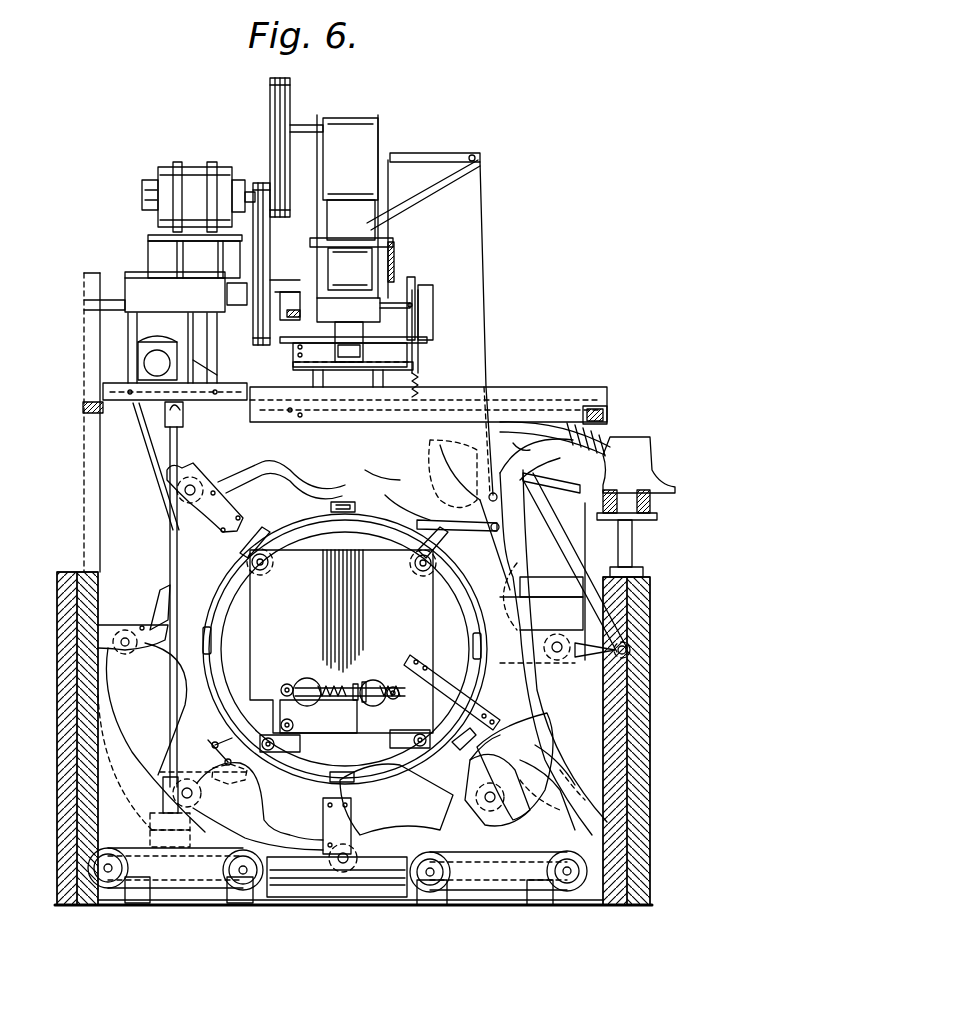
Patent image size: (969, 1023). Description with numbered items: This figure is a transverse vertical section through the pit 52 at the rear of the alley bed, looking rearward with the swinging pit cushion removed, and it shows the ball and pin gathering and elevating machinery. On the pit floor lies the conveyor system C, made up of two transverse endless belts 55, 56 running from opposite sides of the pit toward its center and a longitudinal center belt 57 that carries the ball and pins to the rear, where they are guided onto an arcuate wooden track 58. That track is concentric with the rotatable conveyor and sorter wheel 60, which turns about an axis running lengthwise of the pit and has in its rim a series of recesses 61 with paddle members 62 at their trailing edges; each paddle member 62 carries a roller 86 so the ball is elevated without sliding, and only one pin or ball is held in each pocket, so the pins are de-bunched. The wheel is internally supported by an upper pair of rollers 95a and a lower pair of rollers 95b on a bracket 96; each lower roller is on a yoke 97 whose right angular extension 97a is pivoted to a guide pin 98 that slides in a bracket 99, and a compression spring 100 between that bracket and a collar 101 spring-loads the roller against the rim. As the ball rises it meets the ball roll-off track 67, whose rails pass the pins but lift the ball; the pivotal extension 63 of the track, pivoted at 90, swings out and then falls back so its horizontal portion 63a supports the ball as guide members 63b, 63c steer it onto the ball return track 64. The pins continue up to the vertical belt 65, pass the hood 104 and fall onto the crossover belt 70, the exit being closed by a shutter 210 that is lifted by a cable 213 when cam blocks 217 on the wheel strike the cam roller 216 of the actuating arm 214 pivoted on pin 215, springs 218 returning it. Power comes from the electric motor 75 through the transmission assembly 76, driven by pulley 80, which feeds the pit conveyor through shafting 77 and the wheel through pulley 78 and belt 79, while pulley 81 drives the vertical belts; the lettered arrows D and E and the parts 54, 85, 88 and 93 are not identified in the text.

The pit 52 is at (583, 900).
The belt 79 is at (143, 432).
The crossover belt 70 is at (352, 302).
The electric motor 75 is at (193, 160).
The transmission assembly 76 is at (140, 300).
The pulley 78 is at (153, 340).
The pulley 81 is at (272, 93).
The drive direction E is at (249, 150).
The pulley 80 is at (270, 270).
The cam roller 216 is at (412, 508).
The vertical belt 65 is at (355, 187).
The shutter 210 is at (355, 277).
The hood 104 is at (397, 218).
The spring 218 is at (391, 266).
The cable 213 is at (487, 298).
The cam block 217 is at (278, 533).
The upper roller 95a is at (270, 570).
The bracket 96 is at (250, 626).
The compression spring 100 is at (305, 680).
The guide pin 98 is at (345, 684).
The bracket 99 is at (355, 700).
The collar 101 is at (285, 684).
The right angular extension 97a is at (318, 716).
The yoke 97 is at (405, 712).
The lower roller 95b is at (420, 745).
The roller 86 is at (188, 500).
The paddle member 62 is at (188, 470).
The rotatable conveyor and sorter wheel 60 is at (226, 472).
The link 85 is at (242, 480).
The recess 61 is at (283, 482).
The shafting 77 is at (165, 612).
The direction D is at (145, 566).
The arm 54 is at (491, 630).
The actuating arm 214 is at (450, 521).
The pin 215 is at (478, 540).
The pivotal extension 63 is at (553, 637).
The ball roll-off track 67 is at (518, 560).
The guide member 63b is at (603, 437).
The guide member 63c is at (539, 449).
The horizontal portion 63a is at (580, 472).
The slide 93 is at (686, 502).
The ball return track 64 is at (657, 515).
The pivot 90 is at (630, 651).
The endless belt 55 is at (135, 848).
The endless belt 56 is at (545, 852).
The endless belt 57 is at (373, 890).
The conveyor system C is at (300, 897).
The arcuate wooden track 58 is at (376, 805).
The link 88 is at (548, 800).